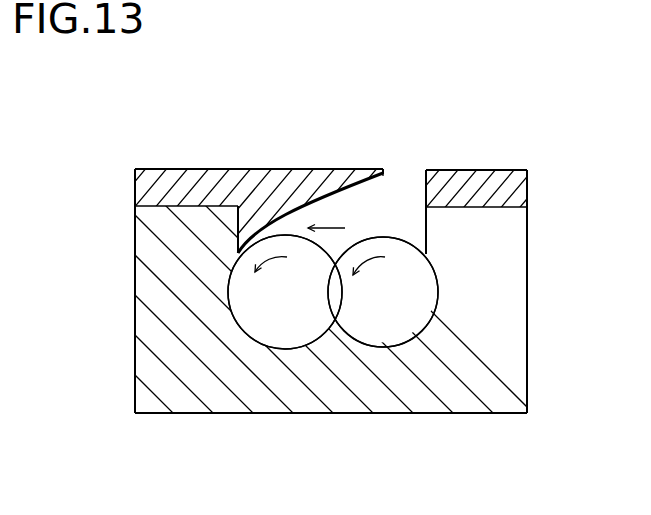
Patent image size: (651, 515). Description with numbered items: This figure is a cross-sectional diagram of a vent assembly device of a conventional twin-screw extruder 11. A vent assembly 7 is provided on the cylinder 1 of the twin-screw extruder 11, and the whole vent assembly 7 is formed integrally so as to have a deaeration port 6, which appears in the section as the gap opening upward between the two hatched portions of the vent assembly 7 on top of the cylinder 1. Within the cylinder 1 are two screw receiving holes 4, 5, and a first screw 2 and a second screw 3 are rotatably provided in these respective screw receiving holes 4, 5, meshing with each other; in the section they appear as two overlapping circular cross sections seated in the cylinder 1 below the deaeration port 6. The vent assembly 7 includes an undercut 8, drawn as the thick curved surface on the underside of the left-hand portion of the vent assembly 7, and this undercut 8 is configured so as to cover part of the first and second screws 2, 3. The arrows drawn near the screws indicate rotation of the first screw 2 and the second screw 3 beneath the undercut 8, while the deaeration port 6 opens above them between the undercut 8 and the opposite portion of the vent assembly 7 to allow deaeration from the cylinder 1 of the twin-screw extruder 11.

The cylinder 1 is at (505, 242).
The first screw 2 is at (260, 335).
The second screw 3 is at (420, 303).
The screw receiving hole 4 is at (237, 316).
The screw receiving hole 5 is at (405, 330).
The deaeration port 6 is at (400, 183).
The vent assembly 7 is at (248, 180).
The undercut 8 is at (314, 178).
The twin-screw extruder 11 is at (542, 197).